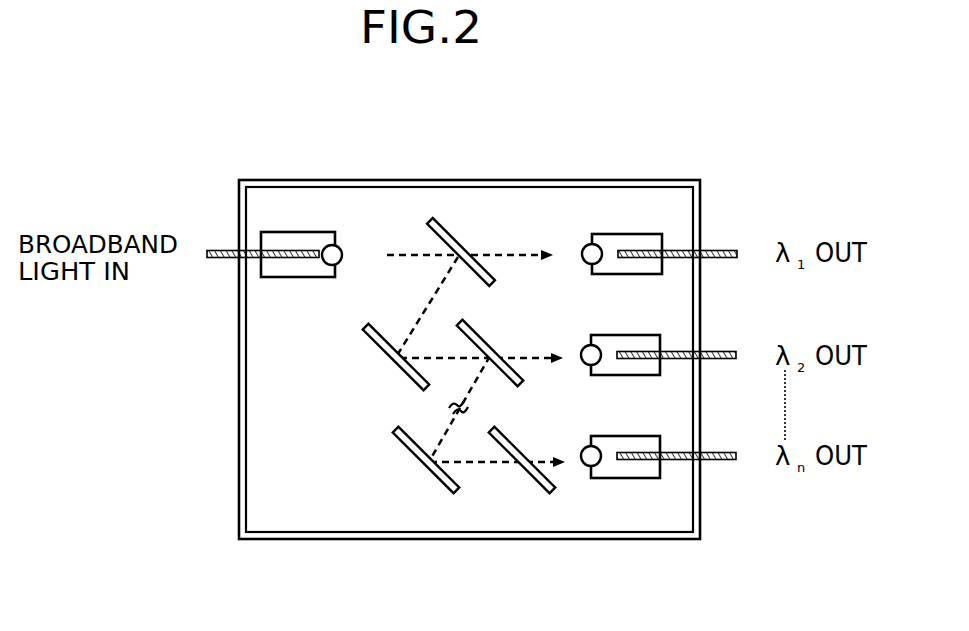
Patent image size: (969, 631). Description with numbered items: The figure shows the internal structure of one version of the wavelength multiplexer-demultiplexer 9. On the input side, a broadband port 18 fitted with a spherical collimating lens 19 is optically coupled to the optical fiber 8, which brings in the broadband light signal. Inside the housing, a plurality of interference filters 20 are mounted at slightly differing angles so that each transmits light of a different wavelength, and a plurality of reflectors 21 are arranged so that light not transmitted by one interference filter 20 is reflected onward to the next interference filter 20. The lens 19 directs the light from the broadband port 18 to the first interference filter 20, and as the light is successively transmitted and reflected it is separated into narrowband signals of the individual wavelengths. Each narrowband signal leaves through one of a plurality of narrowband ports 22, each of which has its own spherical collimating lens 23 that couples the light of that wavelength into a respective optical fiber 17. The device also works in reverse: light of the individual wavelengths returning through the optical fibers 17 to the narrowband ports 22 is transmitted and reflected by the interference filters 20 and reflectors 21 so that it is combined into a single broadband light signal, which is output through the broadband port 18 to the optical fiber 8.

The optical fiber 8 is at (218, 262).
The wavelength multiplexer-demultiplexer 9 is at (700, 183).
The optical fibers 17 is at (710, 250).
The broadband port 18 is at (283, 278).
The spherical collimating lens 19 is at (333, 245).
The interference filters 20 is at (447, 232).
The reflectors 21 is at (385, 351).
The narrowband ports 22 is at (594, 233).
The spherical collimating lens 23 is at (588, 466).